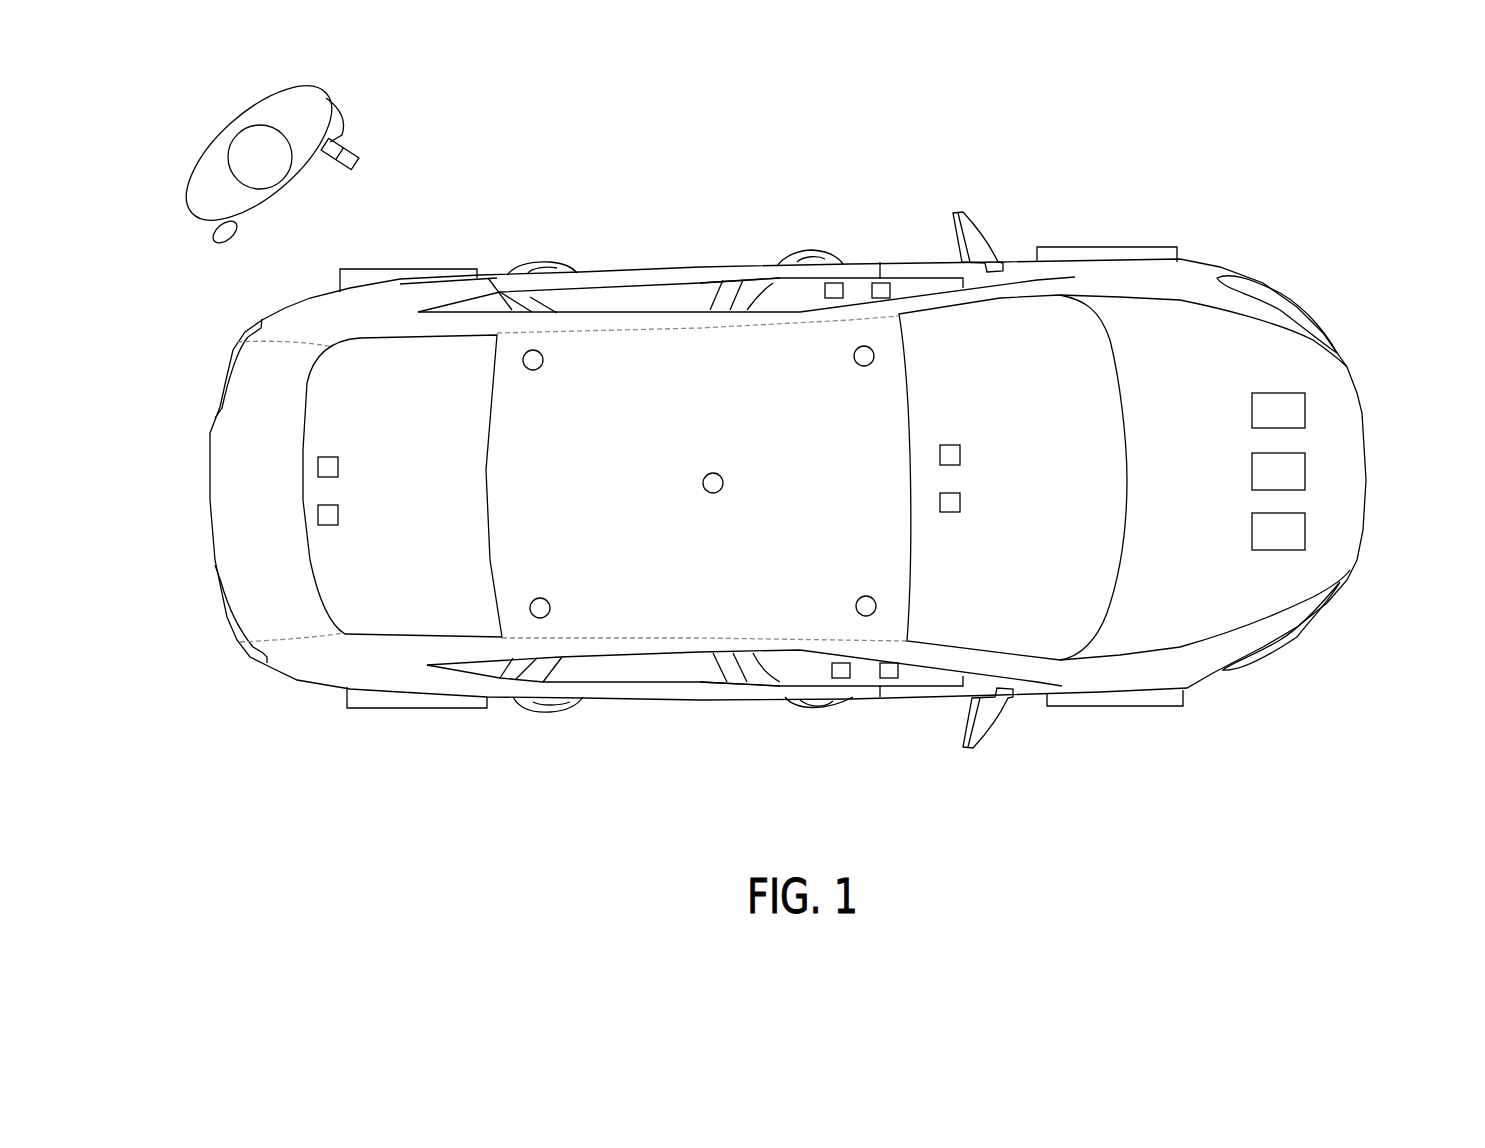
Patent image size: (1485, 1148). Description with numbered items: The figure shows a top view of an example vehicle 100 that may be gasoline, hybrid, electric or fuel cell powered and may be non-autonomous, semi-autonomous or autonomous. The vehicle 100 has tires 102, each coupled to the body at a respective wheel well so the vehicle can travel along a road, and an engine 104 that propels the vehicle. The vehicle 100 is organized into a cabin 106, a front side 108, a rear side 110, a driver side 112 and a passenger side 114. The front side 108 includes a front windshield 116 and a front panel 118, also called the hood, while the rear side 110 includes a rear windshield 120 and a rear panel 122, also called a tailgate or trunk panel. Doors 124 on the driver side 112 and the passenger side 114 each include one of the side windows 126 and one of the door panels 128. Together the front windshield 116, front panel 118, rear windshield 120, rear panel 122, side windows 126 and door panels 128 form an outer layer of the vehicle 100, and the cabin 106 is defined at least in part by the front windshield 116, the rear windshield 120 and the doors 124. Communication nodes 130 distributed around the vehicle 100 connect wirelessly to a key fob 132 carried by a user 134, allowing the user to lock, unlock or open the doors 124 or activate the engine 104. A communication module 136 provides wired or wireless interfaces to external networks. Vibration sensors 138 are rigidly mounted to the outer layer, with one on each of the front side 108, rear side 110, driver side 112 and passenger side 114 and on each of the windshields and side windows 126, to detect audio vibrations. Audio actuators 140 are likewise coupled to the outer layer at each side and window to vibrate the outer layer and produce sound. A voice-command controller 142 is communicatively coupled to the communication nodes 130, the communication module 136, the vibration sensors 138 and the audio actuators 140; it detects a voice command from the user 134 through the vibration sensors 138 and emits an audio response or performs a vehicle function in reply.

The vehicle 100 is at (1047, 126).
The tires 102 is at (410, 268).
The engine 104 is at (1297, 485).
The cabin 106 is at (734, 532).
The front side 108 is at (1388, 462).
The rear side 110 is at (183, 493).
The driver side 112 is at (654, 168).
The passenger side 114 is at (668, 800).
The front windshield 116 is at (1054, 489).
The front panel 118 is at (1212, 484).
The rear windshield 120 is at (430, 502).
The rear panel 122 is at (277, 507).
The doors 124 is at (756, 248).
The side windows 126 is at (787, 297).
The door panels 128 is at (907, 268).
The communication nodes 130 is at (535, 371).
The key fob 132 is at (357, 161).
The user 134 is at (215, 168).
The communication module 136 is at (1297, 424).
The vibration sensors 138 is at (835, 283).
The audio actuators 140 is at (880, 283).
The voice-command controller 142 is at (1297, 545).